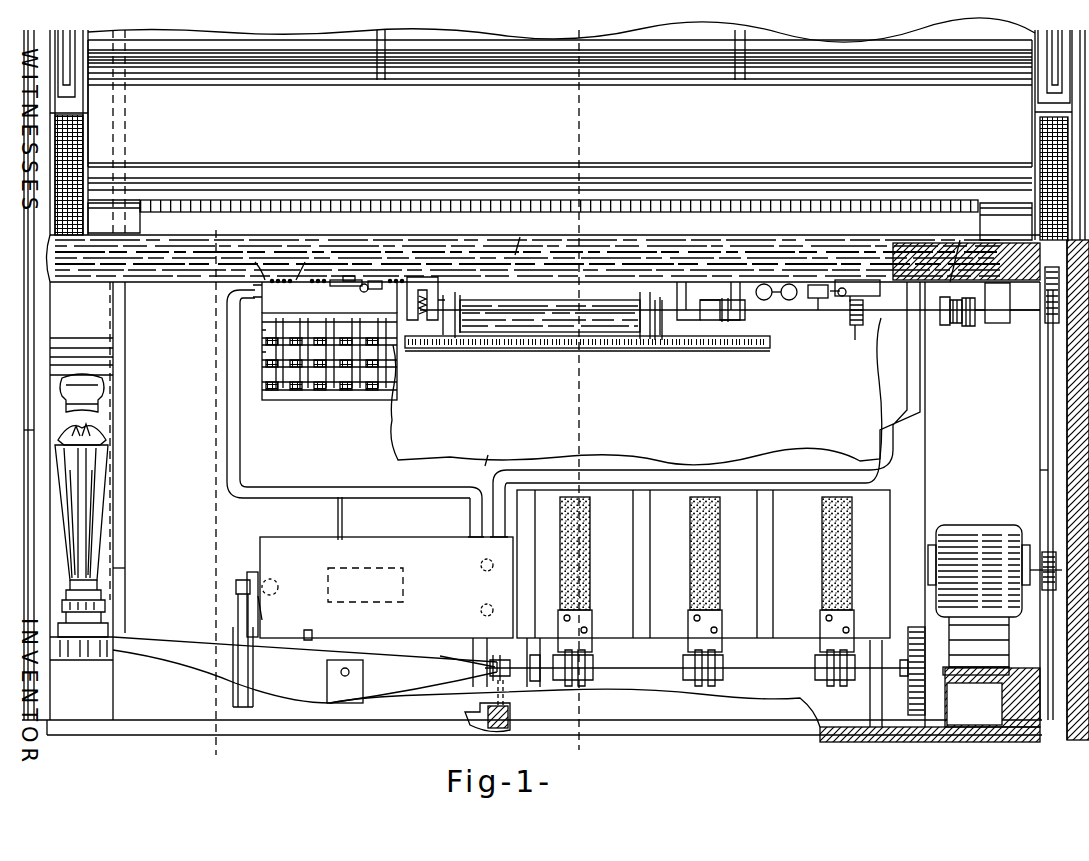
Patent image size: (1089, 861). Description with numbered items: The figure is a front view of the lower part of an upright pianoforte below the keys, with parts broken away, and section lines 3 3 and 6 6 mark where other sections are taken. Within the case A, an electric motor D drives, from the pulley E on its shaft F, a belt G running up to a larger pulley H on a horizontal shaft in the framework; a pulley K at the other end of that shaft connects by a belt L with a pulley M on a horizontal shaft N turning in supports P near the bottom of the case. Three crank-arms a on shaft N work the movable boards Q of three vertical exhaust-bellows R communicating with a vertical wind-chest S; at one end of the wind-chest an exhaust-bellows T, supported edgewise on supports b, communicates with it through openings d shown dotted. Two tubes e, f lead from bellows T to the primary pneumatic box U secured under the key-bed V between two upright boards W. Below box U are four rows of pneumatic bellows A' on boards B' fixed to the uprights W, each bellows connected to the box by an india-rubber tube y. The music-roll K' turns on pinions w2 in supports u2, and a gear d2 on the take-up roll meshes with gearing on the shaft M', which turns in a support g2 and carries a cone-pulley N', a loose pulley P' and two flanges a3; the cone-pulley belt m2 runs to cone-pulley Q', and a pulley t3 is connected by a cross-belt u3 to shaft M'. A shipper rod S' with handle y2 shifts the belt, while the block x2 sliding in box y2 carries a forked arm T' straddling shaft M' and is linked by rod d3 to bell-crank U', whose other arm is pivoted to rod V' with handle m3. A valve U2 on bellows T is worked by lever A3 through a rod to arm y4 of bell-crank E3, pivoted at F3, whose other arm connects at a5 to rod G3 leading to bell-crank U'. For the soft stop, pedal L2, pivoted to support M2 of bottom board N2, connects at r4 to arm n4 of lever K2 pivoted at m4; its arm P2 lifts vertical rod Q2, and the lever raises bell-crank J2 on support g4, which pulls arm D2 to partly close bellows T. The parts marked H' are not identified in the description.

The section line 6 is at (212, 496).
The section line 3 is at (586, 388).
The hangers H' is at (286, 246).
The arm of bell-crank lever y4 is at (346, 280).
The bell-crank lever E3 is at (352, 276).
The pivot F3 is at (366, 284).
The rod G3 is at (380, 281).
The supports u2 is at (695, 282).
The key-bed V is at (524, 233).
The rod V' is at (794, 290).
The handle m3 is at (790, 284).
The rod d3 is at (838, 282).
The block x2 is at (852, 280).
The handle y2 is at (790, 300).
The cone-pulley Q' is at (955, 247).
The connection point a5 is at (393, 264).
The primary pneumatic box U is at (251, 310).
The india-rubber tube y is at (400, 380).
The boards B' is at (289, 352).
The pneumatic bellows A' is at (358, 356).
The upright boards W is at (262, 345).
The tube e is at (470, 508).
The music-roll K' is at (549, 334).
The gear d2 is at (660, 340).
The shafts or pinions w2 is at (680, 348).
The cross-belt u3 is at (728, 322).
The pulley t3 is at (742, 320).
The shipper rod S' is at (776, 320).
The bell-crank lever U' is at (807, 333).
The shaft M' is at (730, 319).
The forked arm T' is at (859, 346).
The flanges a3 is at (884, 300).
The cone-pulley belt m2 is at (940, 315).
The pulley K is at (951, 333).
The cone-pulley N' is at (965, 332).
The loose pulley P' is at (983, 336).
The support g2 is at (1015, 312).
The pulley H is at (1041, 493).
The tube f is at (505, 490).
The belt L is at (926, 433).
The case or frame A is at (534, 434).
The belt G is at (1048, 472).
The wind-chest S is at (492, 464).
The exhaust-bellows T is at (386, 574).
The lever A3 is at (338, 518).
The valve U2 is at (358, 575).
The exhaust-bellows R is at (706, 553).
The movable boards Q is at (703, 564).
The electric motor D is at (980, 545).
The motor shaft F is at (1040, 552).
The pulley E is at (1033, 585).
The openings d is at (481, 608).
The supports b is at (478, 640).
The vertical rod Q2 is at (125, 572).
The arm D2 is at (252, 572).
The arm of lever P2 is at (128, 640).
The horizontal lever K2 is at (196, 646).
The bell-crank lever J2 is at (237, 643).
The support g4 is at (262, 640).
The arm of lever n4 is at (467, 651).
The supports P is at (762, 681).
The crank-arms a is at (822, 680).
The support M2 is at (363, 663).
The pivot m4 is at (345, 681).
The connection point r4 is at (498, 688).
The bottom board N2 is at (400, 725).
The pedal L2 is at (512, 710).
The horizontal shaft N is at (906, 671).
The pulley M is at (894, 680).